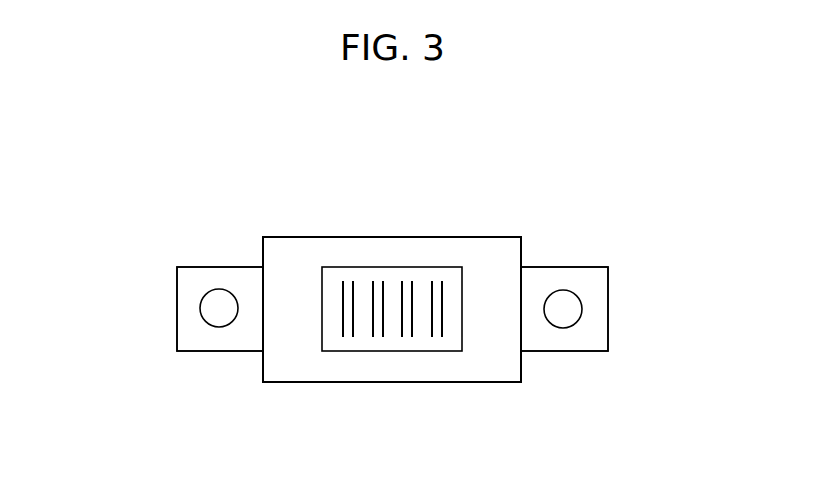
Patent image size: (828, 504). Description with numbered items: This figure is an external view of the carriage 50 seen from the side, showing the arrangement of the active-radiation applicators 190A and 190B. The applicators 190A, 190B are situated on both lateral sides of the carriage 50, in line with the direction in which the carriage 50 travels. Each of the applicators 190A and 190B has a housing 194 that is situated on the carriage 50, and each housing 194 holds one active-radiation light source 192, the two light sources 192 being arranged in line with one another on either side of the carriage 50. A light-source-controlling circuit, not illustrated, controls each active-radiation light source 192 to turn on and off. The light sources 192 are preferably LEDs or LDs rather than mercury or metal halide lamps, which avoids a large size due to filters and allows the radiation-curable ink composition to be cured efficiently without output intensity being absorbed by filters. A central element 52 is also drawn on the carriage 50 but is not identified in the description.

The carriage 50 is at (490, 367).
The display / contact array 52 is at (408, 366).
The active-radiation applicator 190A is at (206, 247).
The active-radiation applicator 190B is at (578, 247).
The active-radiation light source 192 is at (216, 317).
The housing 194 is at (177, 345).